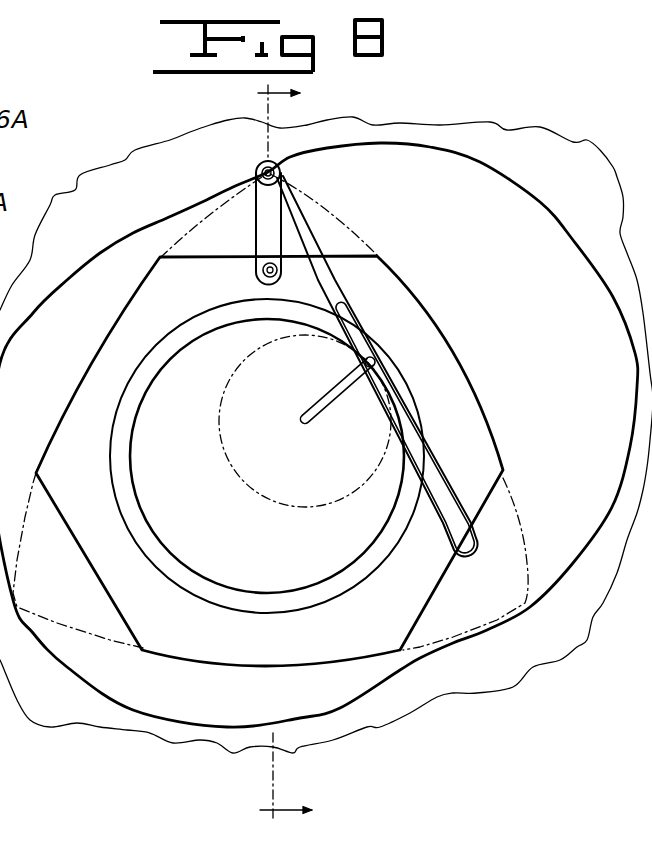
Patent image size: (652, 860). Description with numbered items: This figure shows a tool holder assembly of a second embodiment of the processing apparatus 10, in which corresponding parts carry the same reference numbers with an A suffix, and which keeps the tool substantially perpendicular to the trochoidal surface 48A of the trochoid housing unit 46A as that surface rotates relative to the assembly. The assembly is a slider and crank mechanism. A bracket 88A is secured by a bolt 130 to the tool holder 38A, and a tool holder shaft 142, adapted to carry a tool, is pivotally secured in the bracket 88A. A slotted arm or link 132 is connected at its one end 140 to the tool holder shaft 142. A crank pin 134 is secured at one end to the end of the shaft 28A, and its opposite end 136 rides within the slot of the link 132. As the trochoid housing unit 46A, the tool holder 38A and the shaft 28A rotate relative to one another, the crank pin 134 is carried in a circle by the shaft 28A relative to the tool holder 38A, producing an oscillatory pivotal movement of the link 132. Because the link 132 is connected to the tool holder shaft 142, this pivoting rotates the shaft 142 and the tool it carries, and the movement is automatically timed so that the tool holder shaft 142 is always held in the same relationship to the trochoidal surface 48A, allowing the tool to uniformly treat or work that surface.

The processing apparatus 10 is at (304, 454).
The trochoid housing unit 46A is at (576, 141).
The trochoidal surface 48A is at (180, 215).
The tool holder 38A is at (477, 393).
The shaft 28A is at (323, 567).
The slotted arm or link 132 is at (443, 484).
The bracket 88A is at (277, 230).
The bolt 130 is at (258, 272).
The tool holder shaft 142 is at (281, 171).
The one end of link 140 is at (257, 163).
The opposite end of crank pin 136 is at (372, 361).
The crank pin 134 is at (320, 417).